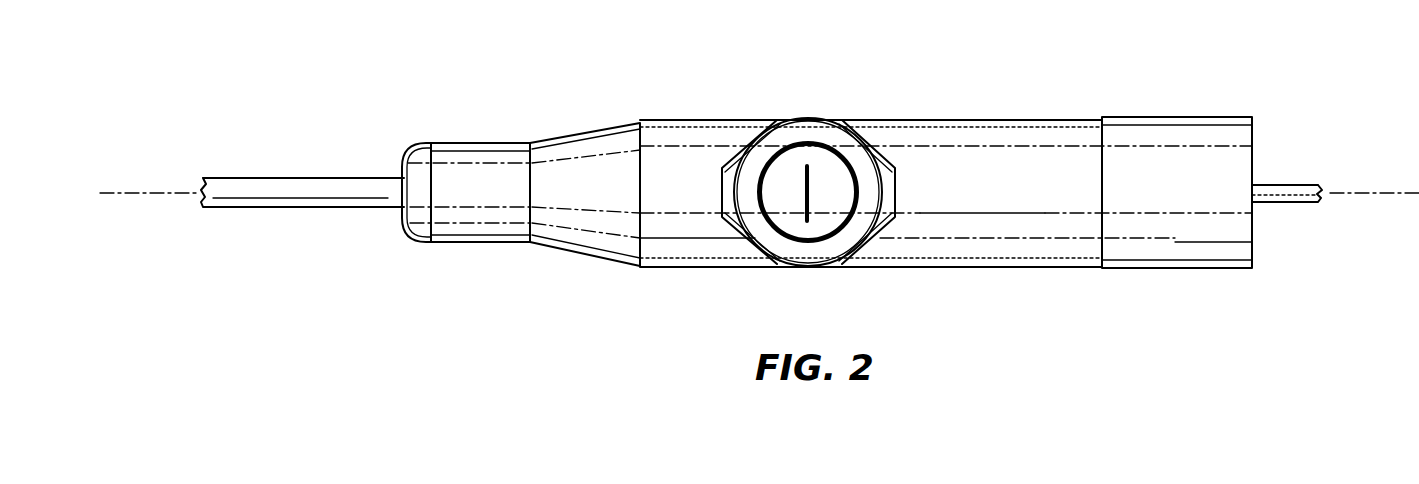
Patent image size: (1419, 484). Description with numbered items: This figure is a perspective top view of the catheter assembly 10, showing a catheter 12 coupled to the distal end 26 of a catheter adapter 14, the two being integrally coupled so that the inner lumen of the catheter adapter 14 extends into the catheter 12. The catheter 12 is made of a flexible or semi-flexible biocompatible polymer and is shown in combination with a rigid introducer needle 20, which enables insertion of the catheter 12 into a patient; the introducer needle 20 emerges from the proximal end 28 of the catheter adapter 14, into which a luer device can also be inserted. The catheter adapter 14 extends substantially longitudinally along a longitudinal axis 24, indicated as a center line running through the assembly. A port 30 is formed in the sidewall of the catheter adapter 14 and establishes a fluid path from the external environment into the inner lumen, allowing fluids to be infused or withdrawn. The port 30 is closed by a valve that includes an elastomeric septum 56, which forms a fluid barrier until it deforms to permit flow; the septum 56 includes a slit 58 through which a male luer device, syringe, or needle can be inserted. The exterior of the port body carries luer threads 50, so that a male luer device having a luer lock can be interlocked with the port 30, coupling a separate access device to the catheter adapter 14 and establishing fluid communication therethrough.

The catheter assembly 10 is at (572, 95).
The catheter 12 is at (278, 185).
The catheter adapter 14 is at (1022, 250).
The introducer needle 20 is at (1287, 194).
The longitudinal axis 24 is at (143, 194).
The distal end 26 is at (410, 153).
The proximal end 28 is at (1253, 128).
The port 30 is at (749, 140).
The luer threads 50 is at (885, 193).
The septum 56 is at (835, 173).
The slit 58 is at (810, 187).